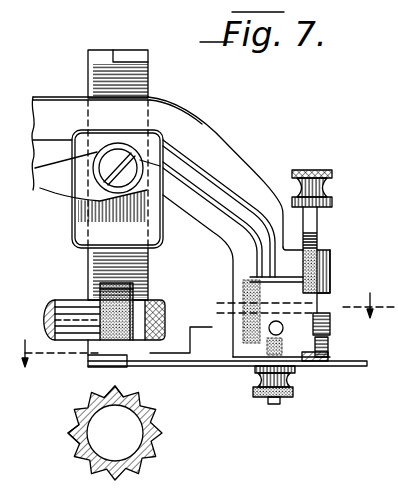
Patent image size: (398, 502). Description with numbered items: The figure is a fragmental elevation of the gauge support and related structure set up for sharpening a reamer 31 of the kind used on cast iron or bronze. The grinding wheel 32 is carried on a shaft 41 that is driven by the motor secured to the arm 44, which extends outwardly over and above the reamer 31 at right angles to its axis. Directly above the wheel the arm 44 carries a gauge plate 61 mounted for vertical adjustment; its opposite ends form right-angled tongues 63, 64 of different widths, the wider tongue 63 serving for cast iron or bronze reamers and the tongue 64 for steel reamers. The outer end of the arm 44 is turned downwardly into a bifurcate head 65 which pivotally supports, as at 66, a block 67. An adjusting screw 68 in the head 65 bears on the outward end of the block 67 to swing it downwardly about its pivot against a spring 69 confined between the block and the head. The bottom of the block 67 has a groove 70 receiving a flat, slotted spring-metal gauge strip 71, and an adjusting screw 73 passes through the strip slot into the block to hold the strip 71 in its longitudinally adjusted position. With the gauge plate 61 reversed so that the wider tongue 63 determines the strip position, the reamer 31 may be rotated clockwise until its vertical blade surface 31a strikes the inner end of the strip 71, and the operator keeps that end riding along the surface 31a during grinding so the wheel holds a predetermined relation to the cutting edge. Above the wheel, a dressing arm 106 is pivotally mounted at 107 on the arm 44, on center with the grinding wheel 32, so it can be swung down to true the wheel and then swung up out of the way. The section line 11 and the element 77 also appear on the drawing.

The section line 11- 11 is at (202, 329).
The reamer 31 is at (151, 440).
The vertical reamer blade surface 31a is at (120, 389).
The grinding wheel 32 is at (150, 283).
The shaft 41 is at (68, 312).
The arm 44 is at (62, 97).
The gauge plate 61 is at (150, 92).
The tongue 63 is at (88, 363).
The tongue 64 is at (150, 57).
The bifurcate head portion 65 is at (331, 328).
The pivot 66 is at (282, 333).
The block 67 is at (329, 345).
The adjusting screw 68 is at (310, 170).
The spring 69 is at (243, 306).
The groove 70 is at (315, 364).
The gauge strip 71 is at (203, 367).
The adjusting screw 73 is at (283, 401).
The pawl 77 is at (72, 411).
The arm 106 is at (65, 196).
The pivot 107 is at (132, 163).